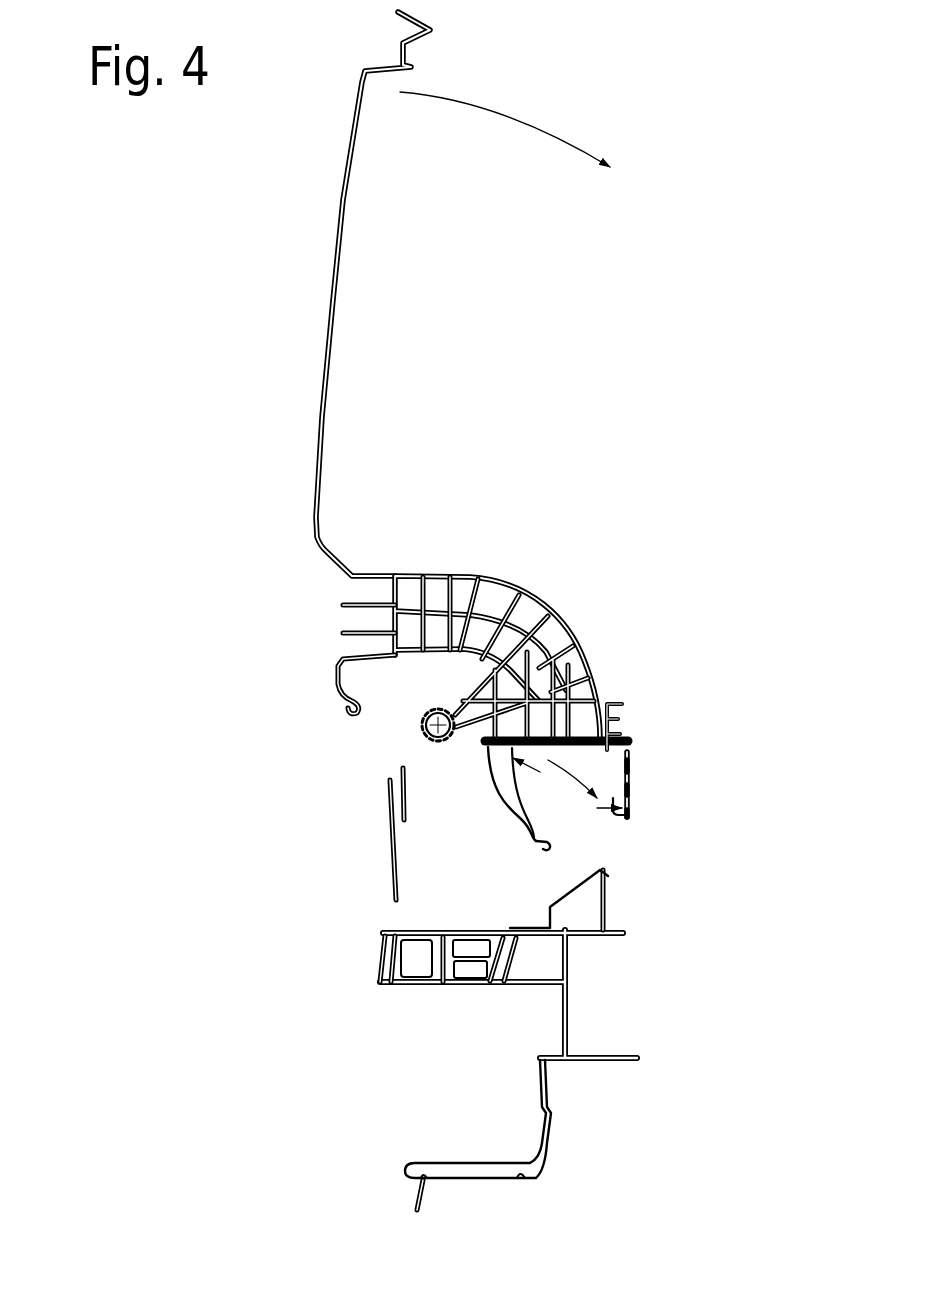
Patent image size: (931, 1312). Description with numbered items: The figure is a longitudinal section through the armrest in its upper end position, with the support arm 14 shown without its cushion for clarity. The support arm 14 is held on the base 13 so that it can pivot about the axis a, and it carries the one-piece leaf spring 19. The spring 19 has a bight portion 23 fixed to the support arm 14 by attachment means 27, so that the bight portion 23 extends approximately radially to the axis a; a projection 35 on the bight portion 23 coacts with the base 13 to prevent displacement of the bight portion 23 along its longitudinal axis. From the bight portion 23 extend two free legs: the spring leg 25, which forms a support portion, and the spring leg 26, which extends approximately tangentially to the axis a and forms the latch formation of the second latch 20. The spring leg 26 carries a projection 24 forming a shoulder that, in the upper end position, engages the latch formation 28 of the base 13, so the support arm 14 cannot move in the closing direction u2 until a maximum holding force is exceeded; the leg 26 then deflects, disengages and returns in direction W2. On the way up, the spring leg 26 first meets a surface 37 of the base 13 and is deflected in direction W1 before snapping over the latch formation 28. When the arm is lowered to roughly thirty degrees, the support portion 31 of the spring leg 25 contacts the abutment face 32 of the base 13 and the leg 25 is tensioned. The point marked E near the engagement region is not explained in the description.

The base 13 is at (433, 983).
The support arm 14 is at (333, 265).
The spring 19 is at (487, 747).
The second latch 20 is at (643, 806).
The bight portion 23 is at (577, 687).
The projection 24 is at (632, 785).
The spring leg 25 is at (500, 809).
The spring leg 26 is at (636, 766).
The attachment means 27 is at (518, 817).
The latch formation 28 is at (635, 790).
The support portion 31 is at (524, 848).
The abutment face 32 is at (397, 858).
The projection 35 is at (558, 690).
The surface 37 is at (622, 810).
The axis a is at (423, 738).
The closing direction u2 is at (505, 126).
The direction W1 is at (555, 778).
The direction W2 is at (595, 813).
The engagement point E is at (614, 727).